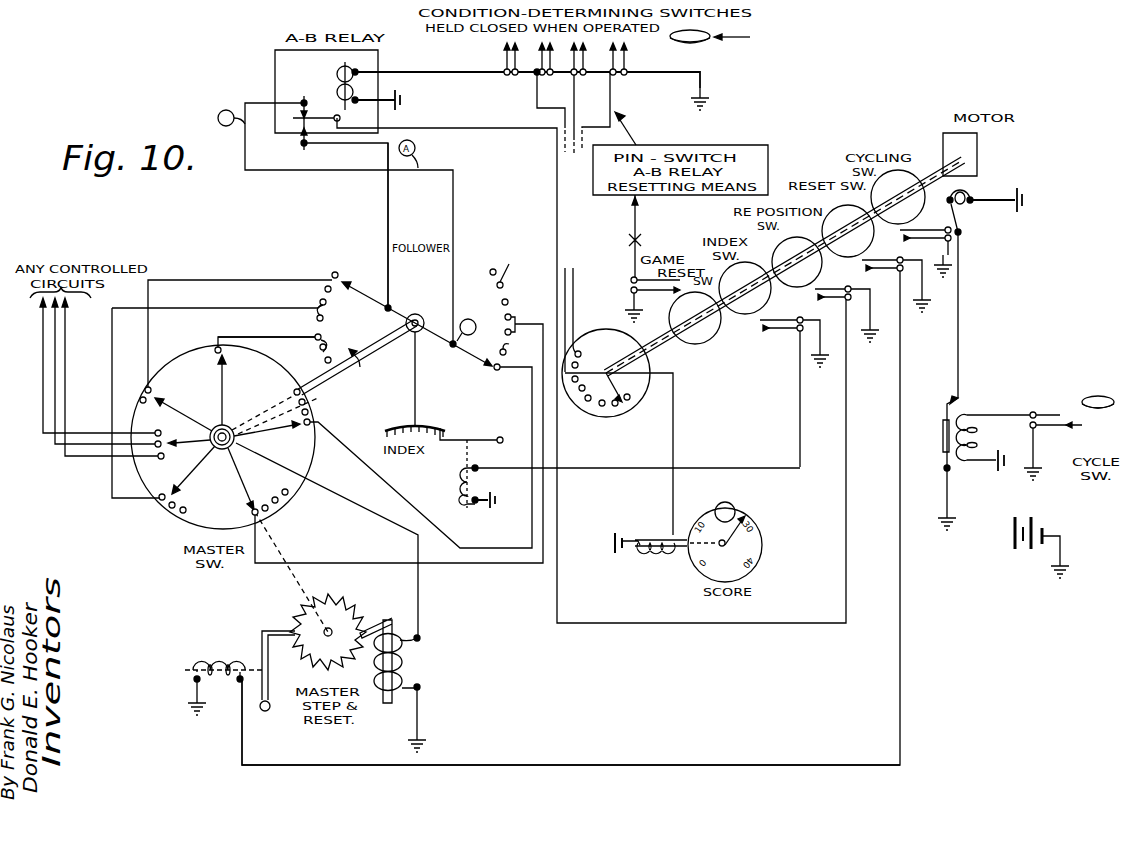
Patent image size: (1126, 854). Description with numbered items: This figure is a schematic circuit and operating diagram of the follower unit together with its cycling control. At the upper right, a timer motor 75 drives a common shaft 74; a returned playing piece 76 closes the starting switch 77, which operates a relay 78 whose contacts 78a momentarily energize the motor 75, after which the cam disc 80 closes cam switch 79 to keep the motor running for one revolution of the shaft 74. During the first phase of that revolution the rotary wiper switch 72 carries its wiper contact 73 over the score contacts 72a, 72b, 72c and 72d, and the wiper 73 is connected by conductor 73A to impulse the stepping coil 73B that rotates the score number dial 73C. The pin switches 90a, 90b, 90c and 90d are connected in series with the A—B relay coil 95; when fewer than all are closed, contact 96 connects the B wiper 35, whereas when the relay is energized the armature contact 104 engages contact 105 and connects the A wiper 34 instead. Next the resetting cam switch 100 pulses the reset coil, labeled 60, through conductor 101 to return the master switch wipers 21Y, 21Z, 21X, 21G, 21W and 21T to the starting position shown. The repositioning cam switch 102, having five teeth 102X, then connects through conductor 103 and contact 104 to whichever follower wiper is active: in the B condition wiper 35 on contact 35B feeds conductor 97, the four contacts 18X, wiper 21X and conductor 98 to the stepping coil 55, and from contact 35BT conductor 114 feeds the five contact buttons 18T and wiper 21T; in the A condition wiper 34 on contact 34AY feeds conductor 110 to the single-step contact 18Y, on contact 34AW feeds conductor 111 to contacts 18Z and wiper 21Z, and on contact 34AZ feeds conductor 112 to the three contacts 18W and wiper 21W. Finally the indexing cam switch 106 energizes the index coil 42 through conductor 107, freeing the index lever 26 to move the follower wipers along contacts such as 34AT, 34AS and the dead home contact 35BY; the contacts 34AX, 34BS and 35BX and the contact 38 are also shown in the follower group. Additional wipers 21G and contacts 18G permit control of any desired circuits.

The A—B relay coil 95 is at (335, 82).
The relay contact 96 is at (302, 108).
The armature contact 104 is at (330, 137).
The relay contact 105 is at (290, 140).
The conductor 103 is at (556, 176).
The pin switch 90a is at (508, 74).
The pin switch 90b is at (545, 74).
The pin switch 90c is at (575, 74).
The pin switch 90d is at (613, 74).
The returned playing piece 76 is at (727, 44).
The conductor 111 is at (211, 278).
The follower wiper A 34 is at (345, 282).
The follower contact 34AW is at (334, 270).
The follower contact 34AX is at (320, 290).
The follower contact 34AT is at (316, 306).
The follower contact 34AZ is at (325, 316).
The follower contact 34AY is at (312, 330).
The follower contact 34AS is at (328, 345).
The follower contact 34BS is at (520, 258).
The conductor 110 is at (277, 337).
The conductor 112 is at (112, 356).
The single-step contact 18Y is at (212, 340).
The master disc contacts 18Z is at (153, 388).
The master switch contacts 18X is at (308, 402).
The contact buttons 18T is at (282, 508).
The master disc contacts 18W is at (160, 506).
The additional contacts 18G is at (60, 450).
The master switch wiper 21Y is at (222, 390).
The master switch wiper 21Z is at (188, 414).
The master switch wiper 21X is at (267, 435).
The additional wiper 21G is at (189, 454).
The master switch wiper 21W is at (212, 486).
The master wiper 21T is at (235, 472).
The index lever 26 is at (418, 407).
The follower wiper B 35 is at (485, 366).
The follower contact 35B is at (499, 373).
The follower contact 35BX is at (526, 343).
The follower contact 35BT is at (511, 316).
The follower contact 35BY is at (507, 299).
The index contact 38 is at (473, 438).
The index coil 42 is at (458, 476).
The conductor 97 is at (495, 545).
The conductor 98 is at (386, 528).
The conductor 114 is at (495, 570).
The master switch stepping coil 55 is at (422, 662).
The master reset coil 60 is at (221, 660).
The rotary wiper switch 72 is at (611, 338).
The score contact 72a is at (627, 402).
The score contact 72b is at (605, 407).
The score contact 72c is at (589, 402).
The score contact 72d is at (578, 392).
The wiper contact 73 is at (640, 372).
The conductor 73A is at (675, 410).
The stepping coil 73B is at (648, 554).
The score number dial 73C is at (752, 515).
The common shaft 74 is at (661, 340).
The timer motor 75 is at (992, 184).
The starting switch 77 is at (1040, 428).
The relay 78 is at (980, 437).
The relay contacts 78a is at (961, 402).
The cam switch 79 is at (922, 228).
The cam disc 80 is at (898, 197).
The resetting cam switch 100 is at (868, 260).
The conductor 101 is at (606, 762).
The repositioning cam switch 102 is at (822, 289).
The teeth 102X is at (797, 262).
The indexing cam switch 106 is at (775, 324).
The conductor 107 is at (790, 467).